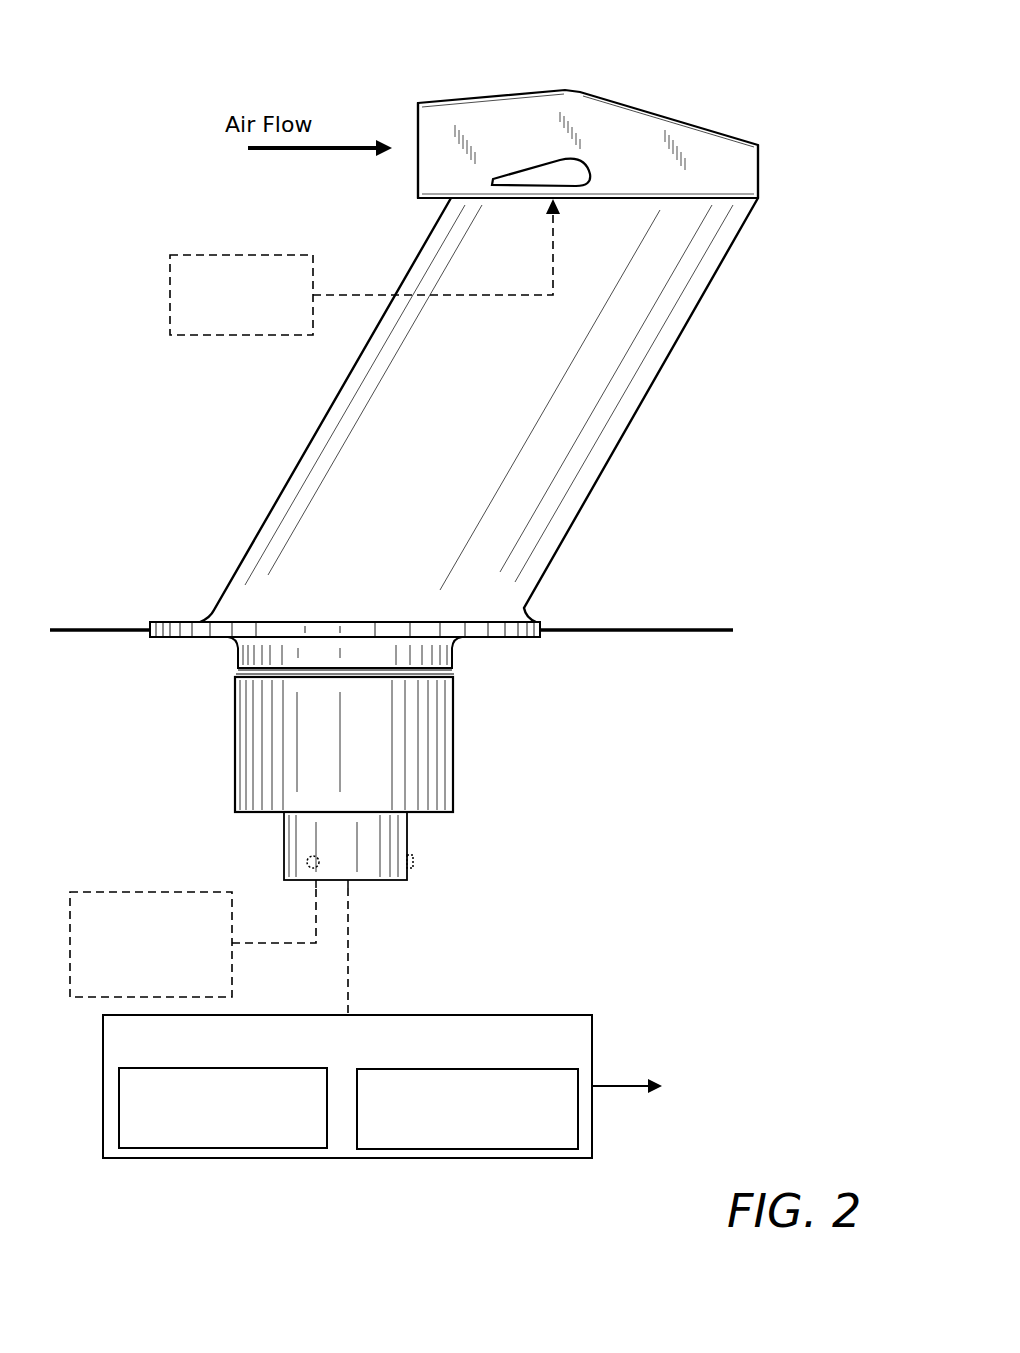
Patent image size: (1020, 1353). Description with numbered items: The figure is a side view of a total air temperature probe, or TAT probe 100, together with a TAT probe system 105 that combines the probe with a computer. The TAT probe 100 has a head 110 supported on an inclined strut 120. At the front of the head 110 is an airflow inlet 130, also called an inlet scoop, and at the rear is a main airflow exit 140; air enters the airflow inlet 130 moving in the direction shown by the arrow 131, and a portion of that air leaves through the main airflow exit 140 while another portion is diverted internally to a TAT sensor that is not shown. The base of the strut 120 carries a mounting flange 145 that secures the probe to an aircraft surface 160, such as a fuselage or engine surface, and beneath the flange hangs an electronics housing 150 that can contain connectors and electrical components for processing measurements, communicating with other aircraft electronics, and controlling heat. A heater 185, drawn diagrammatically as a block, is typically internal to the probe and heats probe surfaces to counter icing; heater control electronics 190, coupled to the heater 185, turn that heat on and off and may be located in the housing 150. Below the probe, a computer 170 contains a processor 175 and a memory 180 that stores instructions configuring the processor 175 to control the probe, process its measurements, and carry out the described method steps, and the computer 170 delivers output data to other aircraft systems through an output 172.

The TAT probe 100 is at (660, 84).
The TAT probe system 105 is at (660, 816).
The head 110 is at (508, 112).
The strut 120 is at (617, 345).
The airflow inlet 130 is at (417, 126).
The arrow 131 is at (305, 150).
The main airflow exit 140 is at (793, 137).
The mounting flange 145 is at (175, 621).
The electronics housing 150 is at (455, 748).
The aircraft surface 160 is at (634, 631).
The computer 170 is at (347, 1023).
The output 172 is at (625, 1085).
The processor 175 is at (223, 1108).
The memory 180 is at (467, 1109).
The heater 185 is at (365, 267).
The heater control electronics 190 is at (193, 942).